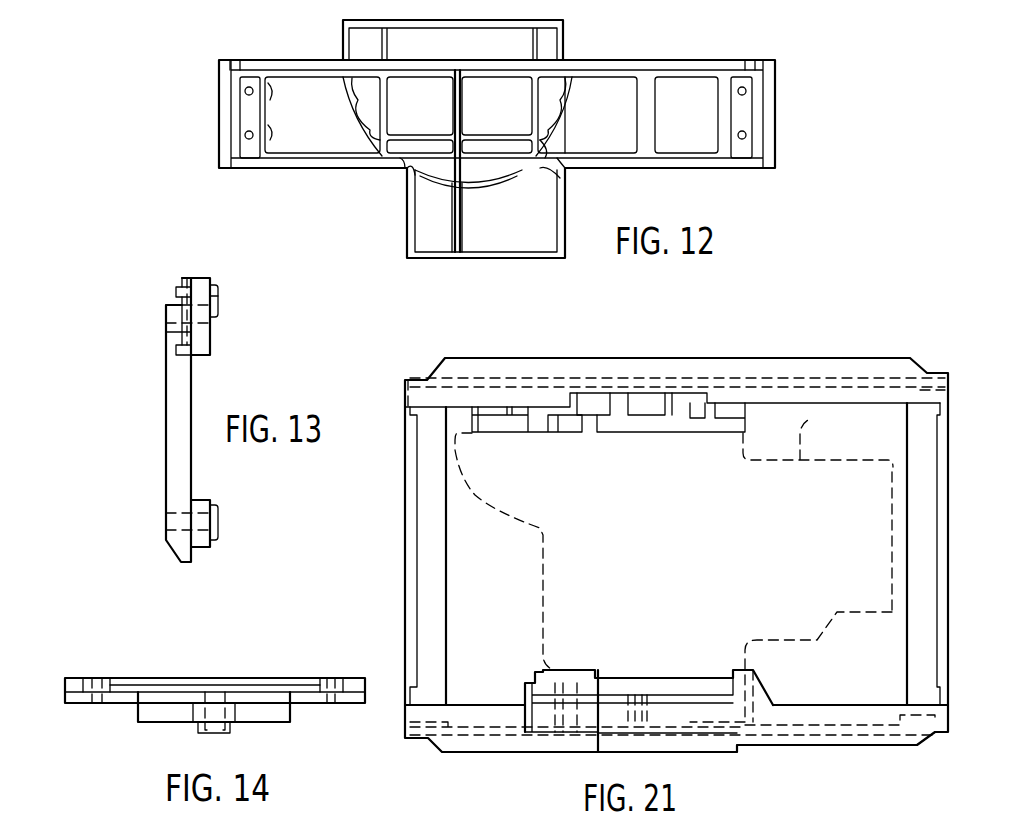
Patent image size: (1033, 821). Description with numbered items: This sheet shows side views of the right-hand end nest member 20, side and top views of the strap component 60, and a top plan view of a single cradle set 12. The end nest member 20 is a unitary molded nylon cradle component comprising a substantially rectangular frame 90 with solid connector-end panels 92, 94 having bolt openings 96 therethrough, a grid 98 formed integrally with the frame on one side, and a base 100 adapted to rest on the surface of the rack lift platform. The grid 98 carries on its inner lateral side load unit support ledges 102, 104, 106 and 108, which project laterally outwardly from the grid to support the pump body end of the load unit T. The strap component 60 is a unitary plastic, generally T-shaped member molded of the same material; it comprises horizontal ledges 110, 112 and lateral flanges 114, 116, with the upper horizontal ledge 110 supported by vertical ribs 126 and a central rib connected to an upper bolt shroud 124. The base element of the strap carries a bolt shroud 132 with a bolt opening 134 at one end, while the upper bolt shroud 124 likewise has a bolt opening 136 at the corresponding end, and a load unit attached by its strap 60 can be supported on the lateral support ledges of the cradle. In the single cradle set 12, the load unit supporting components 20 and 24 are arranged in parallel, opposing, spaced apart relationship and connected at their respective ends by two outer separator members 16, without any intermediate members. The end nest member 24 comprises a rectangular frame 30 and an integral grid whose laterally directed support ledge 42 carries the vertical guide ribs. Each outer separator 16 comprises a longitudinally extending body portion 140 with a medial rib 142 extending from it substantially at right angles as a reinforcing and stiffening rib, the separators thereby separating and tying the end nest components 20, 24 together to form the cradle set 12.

In FIG. 21, the cradle set 12 is at (818, 359).
In FIG. 21, the outer separator member 16 is at (449, 632).
In FIG. 12, the end nest member 20 is at (305, 58).
In FIG. 21, the end nest member 20 is at (820, 741).
In FIG. 21, the end nest member 24 is at (740, 359).
In FIG. 21, the rectangular frame 30 is at (655, 367).
In FIG. 21, the support ledge 42 is at (615, 422).
In FIG. 13, the strap component 60 is at (211, 335).
In FIG. 14, the strap component 60 is at (260, 674).
In FIG. 21, the rectangular frame 90 is at (862, 710).
In FIG. 12, the connector-end panel 92 is at (750, 107).
In FIG. 21, the connector-end panel 92 is at (923, 715).
In FIG. 12, the connector-end panel 94 is at (247, 104).
In FIG. 12, the bolt openings 96 is at (244, 92).
In FIG. 12, the grid 98 is at (556, 19).
In FIG. 12, the base 100 is at (484, 252).
In FIG. 12, the load unit support ledge 102 is at (353, 119).
In FIG. 12, the load unit support ledge 104 is at (404, 172).
In FIG. 12, the load unit support ledge 106 is at (497, 176).
In FIG. 21, the load unit support ledge 106 is at (625, 688).
In FIG. 12, the load unit support ledge 108 is at (569, 103).
In FIG. 13, the upper horizontal ledge 110 is at (197, 276).
In FIG. 14, the upper horizontal ledge 110 is at (270, 708).
In FIG. 13, the horizontal ledge 112 is at (177, 350).
In FIG. 14, the horizontal ledge 112 is at (182, 684).
In FIG. 14, the lateral flange 114 is at (352, 682).
In FIG. 14, the lateral flange 116 is at (75, 682).
In FIG. 13, the upper bolt shroud 124 is at (210, 280).
In FIG. 14, the upper bolt shroud 124 is at (198, 728).
In FIG. 13, the vertical ribs 126 is at (181, 458).
In FIG. 13, the bolt shroud 132 is at (205, 500).
In FIG. 13, the bolt opening 134 is at (217, 527).
In FIG. 13, the bolt opening 136 is at (216, 298).
In FIG. 21, the body portion 140 is at (409, 542).
In FIG. 21, the medial rib 142 is at (422, 595).
In FIG. 21, the load unit T is at (818, 441).